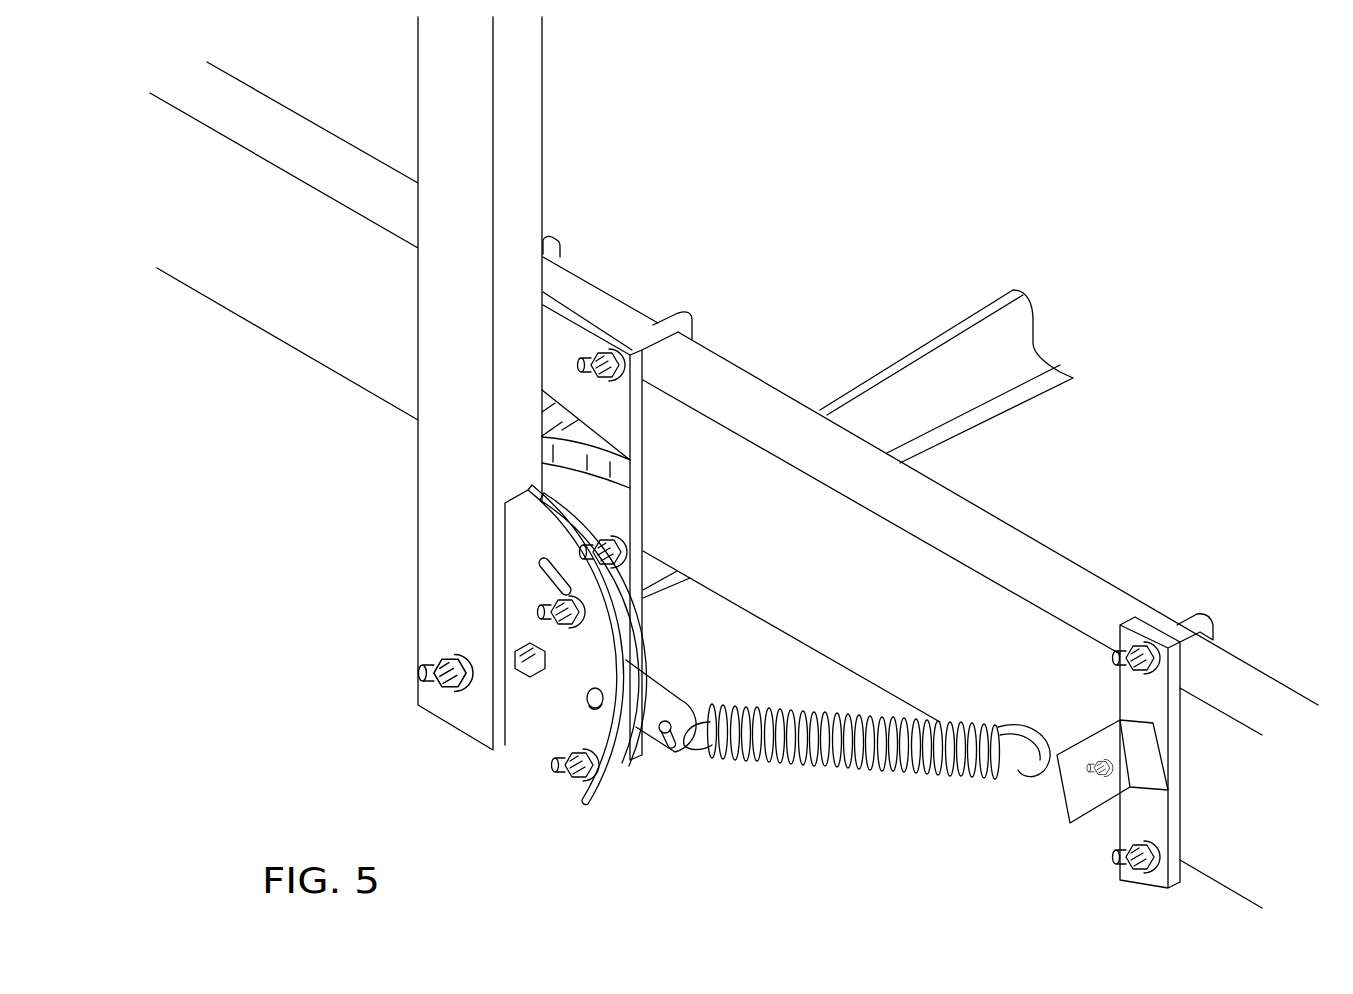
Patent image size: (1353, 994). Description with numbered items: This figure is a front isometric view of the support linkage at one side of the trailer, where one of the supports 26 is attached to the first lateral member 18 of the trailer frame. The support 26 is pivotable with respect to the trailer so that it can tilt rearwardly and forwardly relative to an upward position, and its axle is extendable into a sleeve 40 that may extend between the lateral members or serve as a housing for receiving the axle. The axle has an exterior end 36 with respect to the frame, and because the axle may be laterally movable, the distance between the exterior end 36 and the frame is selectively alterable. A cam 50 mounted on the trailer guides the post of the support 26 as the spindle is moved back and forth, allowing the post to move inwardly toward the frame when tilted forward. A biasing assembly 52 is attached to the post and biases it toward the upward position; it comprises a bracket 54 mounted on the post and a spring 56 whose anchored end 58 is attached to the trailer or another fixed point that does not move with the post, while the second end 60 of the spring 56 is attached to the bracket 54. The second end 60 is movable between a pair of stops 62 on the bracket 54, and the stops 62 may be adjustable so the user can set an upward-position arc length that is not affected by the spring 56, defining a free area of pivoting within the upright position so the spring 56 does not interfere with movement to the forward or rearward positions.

The first lateral member 18 is at (1057, 583).
The support 26 is at (545, 152).
The exterior end 36 is at (437, 698).
The sleeve 40 is at (945, 363).
The cam 50 is at (542, 433).
The biasing assembly 52 is at (797, 790).
The bracket 54 is at (573, 795).
The spring 56 is at (925, 762).
The anchored end 58 is at (1055, 760).
The second end 60 is at (680, 760).
The stops 62 is at (565, 628).